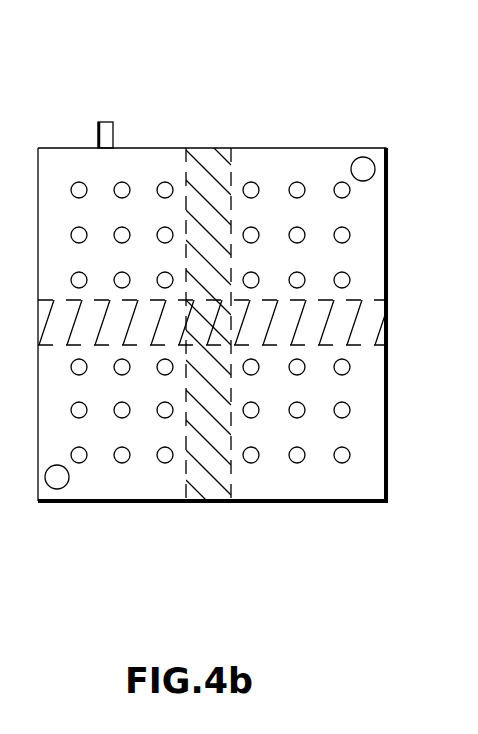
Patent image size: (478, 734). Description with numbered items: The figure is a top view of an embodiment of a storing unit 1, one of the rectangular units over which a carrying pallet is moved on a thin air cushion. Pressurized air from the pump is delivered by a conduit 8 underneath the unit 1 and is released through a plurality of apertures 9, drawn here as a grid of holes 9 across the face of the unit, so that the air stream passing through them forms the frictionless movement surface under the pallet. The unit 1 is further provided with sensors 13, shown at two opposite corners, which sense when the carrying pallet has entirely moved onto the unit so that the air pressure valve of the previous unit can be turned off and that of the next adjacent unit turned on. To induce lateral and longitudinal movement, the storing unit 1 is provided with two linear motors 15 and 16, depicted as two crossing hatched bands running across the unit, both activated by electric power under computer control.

The storing unit 1 is at (375, 242).
The conduit 8 is at (106, 134).
The apertures 9 is at (79, 181).
The sensors 13 is at (361, 168).
The linear motor 15 is at (189, 497).
The linear motor 16 is at (212, 177).